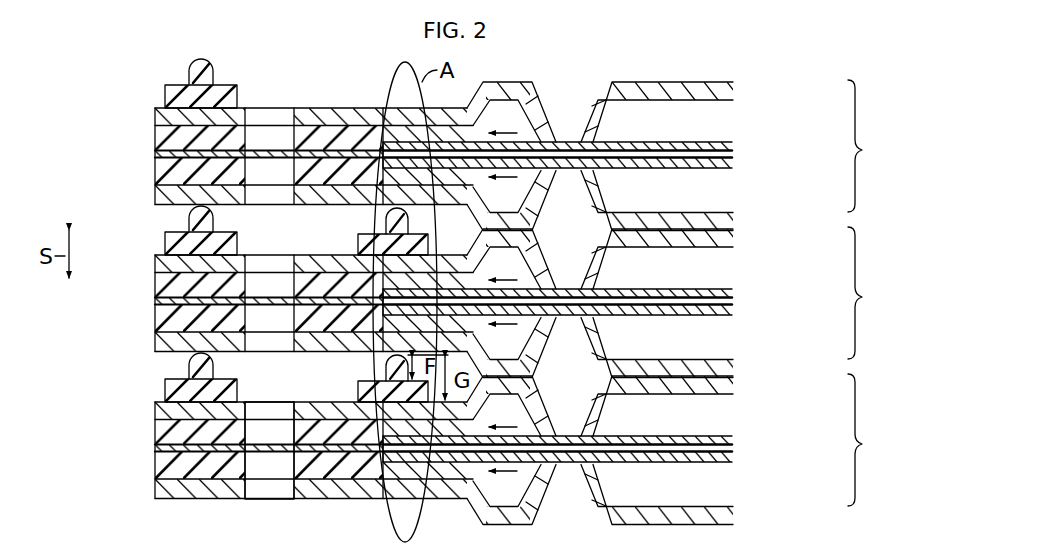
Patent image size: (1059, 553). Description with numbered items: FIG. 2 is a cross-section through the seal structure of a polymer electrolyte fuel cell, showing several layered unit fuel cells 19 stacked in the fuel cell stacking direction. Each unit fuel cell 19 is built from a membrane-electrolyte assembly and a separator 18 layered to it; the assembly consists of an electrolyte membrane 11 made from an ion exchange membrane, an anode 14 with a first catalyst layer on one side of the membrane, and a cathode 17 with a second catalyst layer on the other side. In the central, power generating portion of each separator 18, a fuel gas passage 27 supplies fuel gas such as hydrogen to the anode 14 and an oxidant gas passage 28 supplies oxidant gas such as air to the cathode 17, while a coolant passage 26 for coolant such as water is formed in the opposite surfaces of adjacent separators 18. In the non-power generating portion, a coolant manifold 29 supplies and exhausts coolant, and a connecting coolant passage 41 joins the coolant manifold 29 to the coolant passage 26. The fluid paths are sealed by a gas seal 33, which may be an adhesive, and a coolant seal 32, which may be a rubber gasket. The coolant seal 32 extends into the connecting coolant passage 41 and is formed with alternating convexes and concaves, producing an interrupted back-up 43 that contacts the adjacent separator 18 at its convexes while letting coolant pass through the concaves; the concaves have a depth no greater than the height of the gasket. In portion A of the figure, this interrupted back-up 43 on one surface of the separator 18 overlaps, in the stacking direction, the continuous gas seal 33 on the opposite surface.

The electrolyte membrane 11 is at (732, 154).
The anode 14 is at (730, 146).
The cathode 17 is at (730, 161).
The separator 18 is at (690, 90).
The unit fuel cell 19 is at (872, 293).
The coolant passage 26 is at (569, 227).
The fuel gas passage 27 is at (700, 120).
The oxidant gas passage 28 is at (685, 188).
The coolant manifold 29 is at (257, 472).
The coolant seal 32 is at (165, 98).
The gas seal 33 is at (352, 510).
The connecting coolant passage 41 is at (352, 248).
The interrupted back-up 43 is at (385, 212).